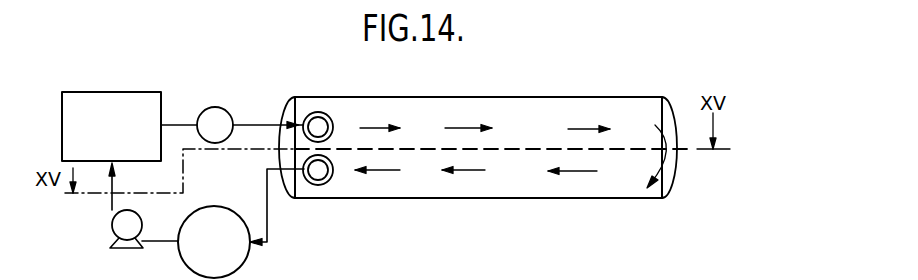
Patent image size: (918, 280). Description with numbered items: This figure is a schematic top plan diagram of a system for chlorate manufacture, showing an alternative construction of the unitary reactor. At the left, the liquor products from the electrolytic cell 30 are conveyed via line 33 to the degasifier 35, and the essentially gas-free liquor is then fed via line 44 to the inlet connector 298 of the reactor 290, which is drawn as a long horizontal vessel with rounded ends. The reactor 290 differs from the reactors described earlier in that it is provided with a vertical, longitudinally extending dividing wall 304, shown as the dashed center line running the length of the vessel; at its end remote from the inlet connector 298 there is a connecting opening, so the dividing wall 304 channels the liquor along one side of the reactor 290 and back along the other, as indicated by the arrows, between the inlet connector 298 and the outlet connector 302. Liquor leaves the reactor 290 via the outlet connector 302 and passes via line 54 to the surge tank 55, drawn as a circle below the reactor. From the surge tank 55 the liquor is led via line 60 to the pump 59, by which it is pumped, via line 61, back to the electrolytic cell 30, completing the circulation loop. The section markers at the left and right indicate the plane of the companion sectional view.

The electrolytic cell 30 is at (116, 88).
The line 33 is at (180, 122).
The degasifier 35 is at (220, 113).
The line 44 is at (263, 122).
The reactor 290 is at (447, 97).
The inlet connector 298 is at (322, 113).
The outlet connector 302 is at (328, 182).
The dividing wall 304 is at (524, 149).
The line 54 is at (273, 172).
The surge tank 55 is at (245, 252).
The line 60 is at (153, 240).
The pump 59 is at (112, 226).
The line 61 is at (108, 184).